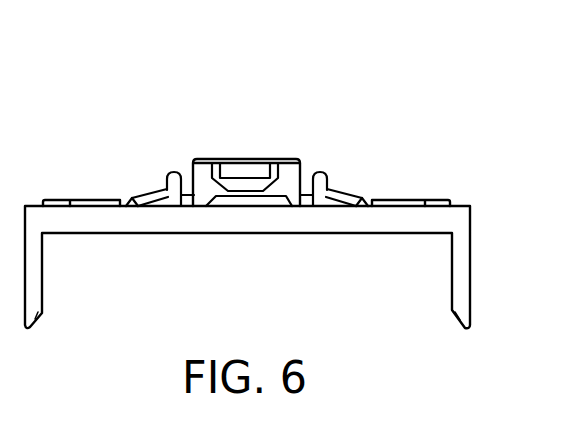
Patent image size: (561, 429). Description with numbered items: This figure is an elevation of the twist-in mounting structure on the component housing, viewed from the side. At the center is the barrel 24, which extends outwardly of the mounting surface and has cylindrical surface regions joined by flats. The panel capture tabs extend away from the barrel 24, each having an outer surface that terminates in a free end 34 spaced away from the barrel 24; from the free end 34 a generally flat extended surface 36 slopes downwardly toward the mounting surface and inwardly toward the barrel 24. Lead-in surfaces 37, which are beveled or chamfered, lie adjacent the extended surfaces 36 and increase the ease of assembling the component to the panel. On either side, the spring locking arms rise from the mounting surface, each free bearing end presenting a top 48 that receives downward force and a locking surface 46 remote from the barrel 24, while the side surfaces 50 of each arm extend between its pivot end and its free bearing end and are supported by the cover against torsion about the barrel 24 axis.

The barrel 24 is at (191, 164).
The free end 34 is at (238, 168).
The extended surface 36 is at (265, 184).
The lead-in surfaces 37 is at (227, 188).
The locking surface 46 is at (327, 186).
The top 48 is at (323, 170).
The side surfaces 50 is at (343, 193).